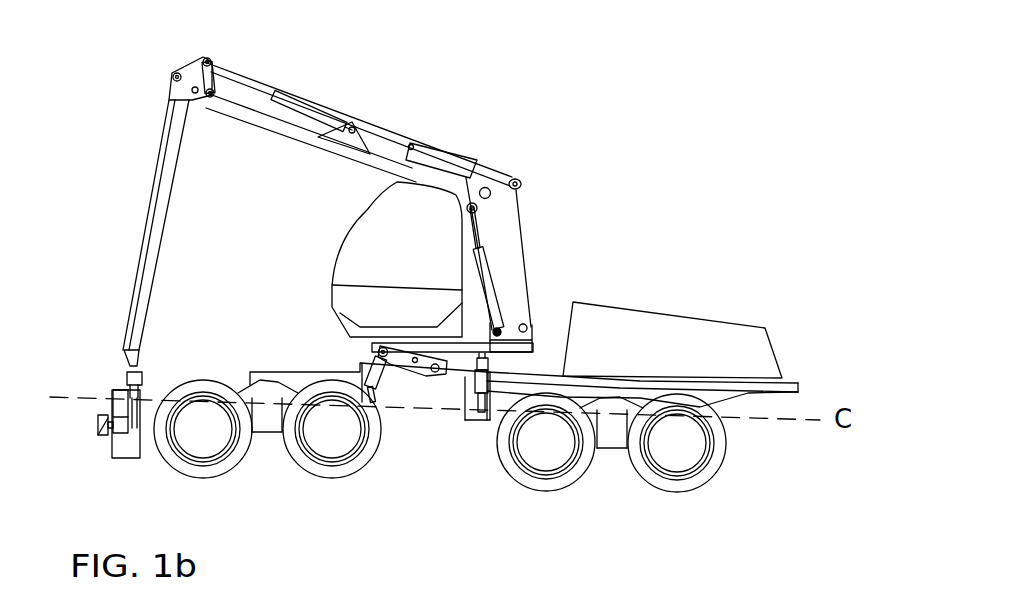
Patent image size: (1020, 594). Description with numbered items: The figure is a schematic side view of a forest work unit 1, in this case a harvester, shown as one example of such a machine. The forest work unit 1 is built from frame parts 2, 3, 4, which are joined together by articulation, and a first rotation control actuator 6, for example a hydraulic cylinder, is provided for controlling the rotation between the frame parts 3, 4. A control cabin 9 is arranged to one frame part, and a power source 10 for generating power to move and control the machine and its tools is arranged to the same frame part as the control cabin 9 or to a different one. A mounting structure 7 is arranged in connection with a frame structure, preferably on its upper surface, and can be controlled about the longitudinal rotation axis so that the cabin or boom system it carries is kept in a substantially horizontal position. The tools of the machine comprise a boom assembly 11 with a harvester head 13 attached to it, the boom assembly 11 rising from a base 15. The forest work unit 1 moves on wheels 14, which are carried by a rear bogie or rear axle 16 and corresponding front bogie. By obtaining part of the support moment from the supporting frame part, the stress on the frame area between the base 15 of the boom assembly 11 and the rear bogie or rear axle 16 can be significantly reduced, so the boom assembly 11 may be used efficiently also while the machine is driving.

The forest work unit 1 is at (728, 205).
The frame part 2 is at (298, 383).
The frame part 3 is at (392, 395).
The frame part 4 is at (747, 395).
The first rotation control actuator 6 is at (476, 392).
The mounting structure 7 is at (366, 341).
The control cabin 9 is at (312, 247).
The power source 10 is at (757, 357).
The boom assembly 11 is at (116, 148).
The harvester head 13 is at (122, 450).
The wheels 14 is at (328, 442).
The base of the boom assembly 15 is at (533, 337).
The rear bogie or rear axle 16 is at (610, 430).